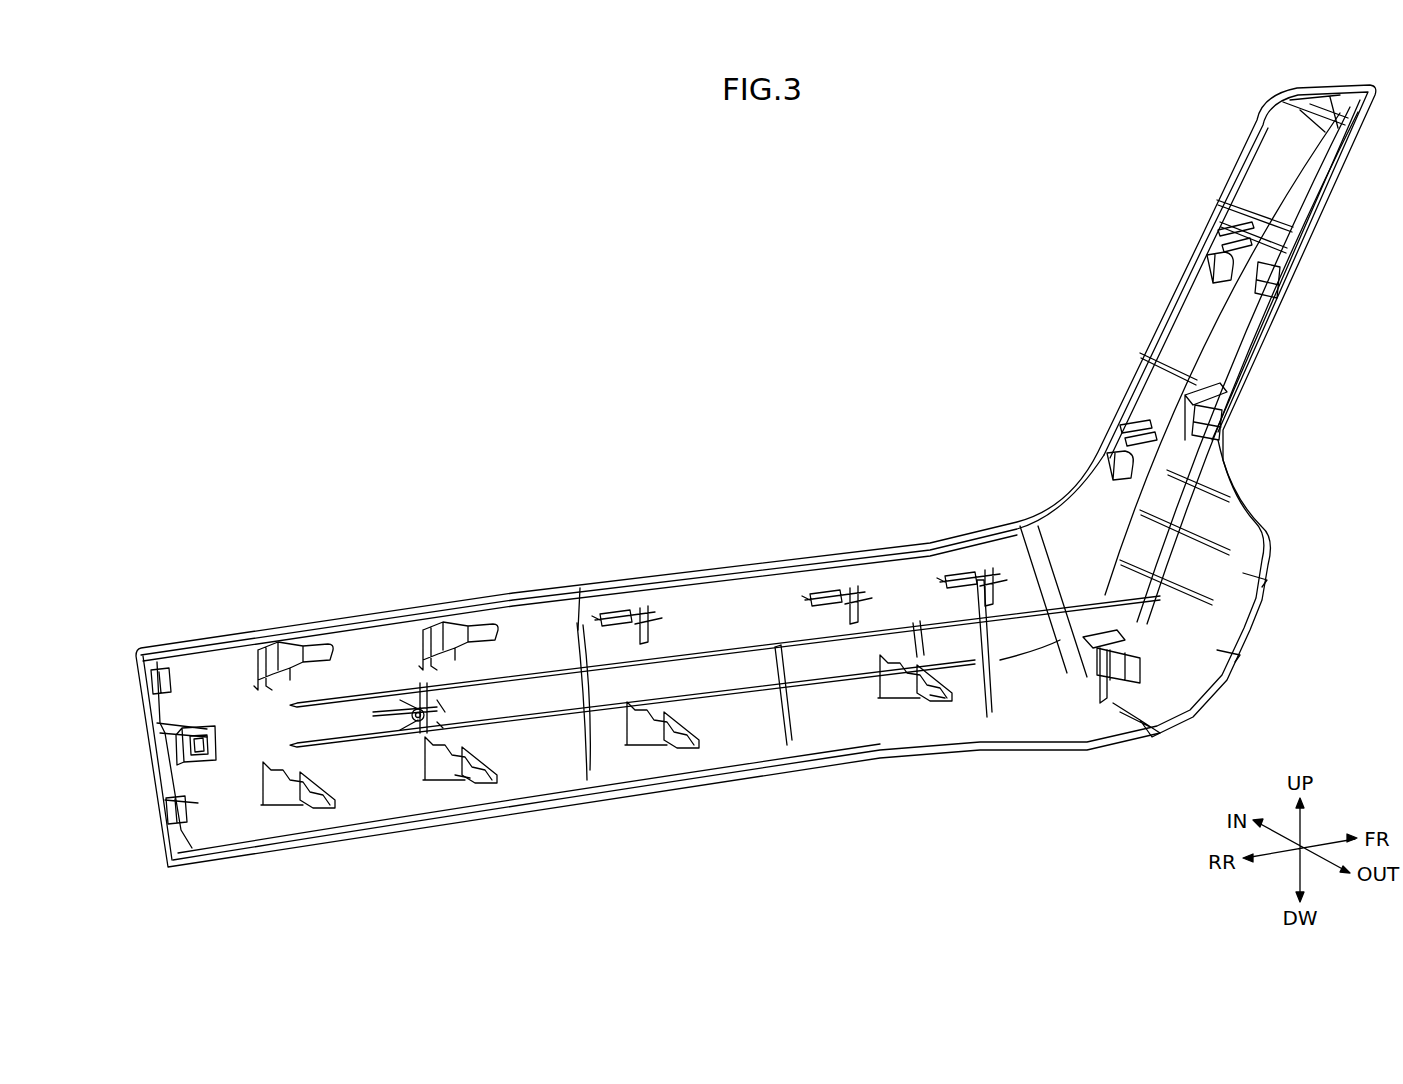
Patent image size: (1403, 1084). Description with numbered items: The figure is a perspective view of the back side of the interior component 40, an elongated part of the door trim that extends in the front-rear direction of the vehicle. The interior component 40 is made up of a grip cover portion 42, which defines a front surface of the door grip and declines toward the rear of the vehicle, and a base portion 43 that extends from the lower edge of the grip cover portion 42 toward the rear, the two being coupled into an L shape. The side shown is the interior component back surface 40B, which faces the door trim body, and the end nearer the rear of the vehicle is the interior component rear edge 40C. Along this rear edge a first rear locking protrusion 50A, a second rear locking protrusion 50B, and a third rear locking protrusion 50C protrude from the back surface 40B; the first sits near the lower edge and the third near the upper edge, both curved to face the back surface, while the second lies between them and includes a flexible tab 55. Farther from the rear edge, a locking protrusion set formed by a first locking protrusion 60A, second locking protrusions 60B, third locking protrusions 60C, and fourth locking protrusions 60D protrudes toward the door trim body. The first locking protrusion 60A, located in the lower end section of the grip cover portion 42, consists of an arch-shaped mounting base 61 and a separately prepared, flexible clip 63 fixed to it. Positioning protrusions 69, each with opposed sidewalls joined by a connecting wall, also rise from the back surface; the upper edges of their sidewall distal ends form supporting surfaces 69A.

The interior component 40 is at (853, 305).
The interior component back surface 40B is at (1037, 667).
The interior component rear edge 40C is at (157, 793).
The grip cover portion 42 is at (1153, 332).
The base portion 43 is at (930, 548).
The first rear locking protrusion 50A is at (187, 810).
The second rear locking protrusion 50B is at (198, 727).
The third rear locking protrusion 50C is at (158, 680).
The flexible tab 55 is at (203, 750).
The first locking protrusion 60A is at (1143, 672).
The second locking protrusions 60B is at (495, 783).
The third locking protrusions 60C is at (625, 620).
The fourth locking protrusions 60D is at (317, 650).
The mounting base 61 is at (1104, 680).
The clip 63 is at (1127, 720).
The positioning protrusions 69 is at (1253, 222).
The supporting surfaces 69A is at (462, 780).